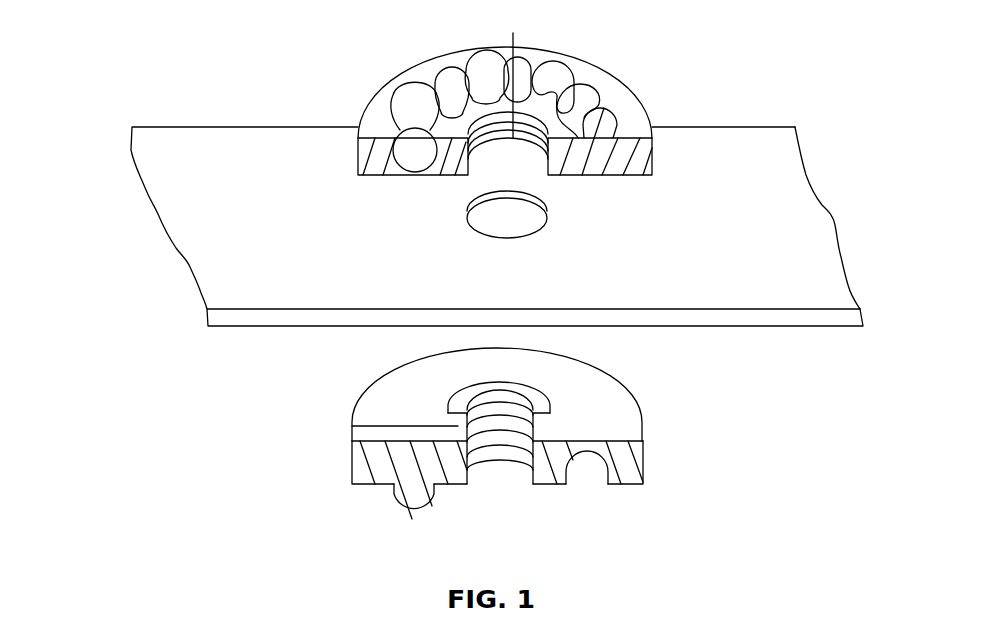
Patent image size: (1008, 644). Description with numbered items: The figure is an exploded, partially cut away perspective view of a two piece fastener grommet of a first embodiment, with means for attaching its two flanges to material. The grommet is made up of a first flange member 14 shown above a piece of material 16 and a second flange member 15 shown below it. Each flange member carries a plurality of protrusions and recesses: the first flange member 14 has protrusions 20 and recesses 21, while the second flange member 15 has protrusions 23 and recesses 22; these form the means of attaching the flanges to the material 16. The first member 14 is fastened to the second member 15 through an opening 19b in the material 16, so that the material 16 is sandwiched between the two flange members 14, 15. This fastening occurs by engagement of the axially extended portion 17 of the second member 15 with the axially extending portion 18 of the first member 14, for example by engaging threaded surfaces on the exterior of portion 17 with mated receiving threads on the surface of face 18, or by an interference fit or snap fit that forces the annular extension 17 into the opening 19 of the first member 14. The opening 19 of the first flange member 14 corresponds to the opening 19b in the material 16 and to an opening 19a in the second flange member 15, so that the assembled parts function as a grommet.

The first flange member 14 is at (559, 91).
The second flange member 15 is at (525, 443).
The material 16 is at (488, 226).
The axially extended portion 17 is at (352, 425).
The axially extending portion 18 is at (511, 72).
The opening 19 is at (840, 218).
The opening 19a is at (512, 497).
The opening 19b is at (518, 220).
The protrusions 20 is at (590, 121).
The recesses 21 is at (409, 152).
The recesses 22 is at (578, 472).
The protrusions 23 is at (417, 508).